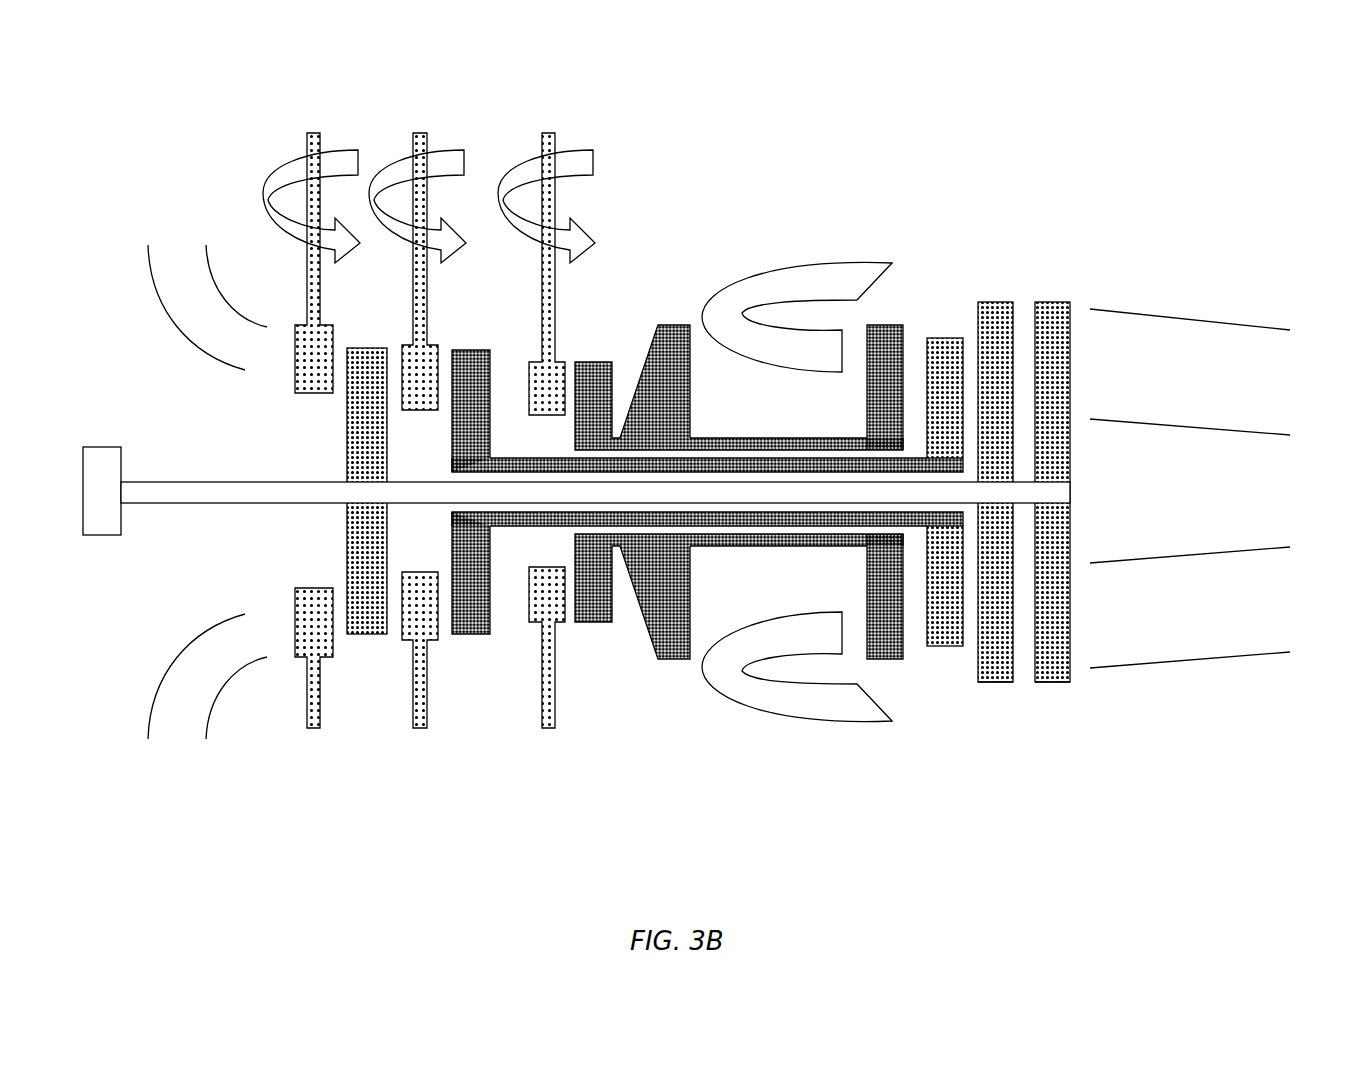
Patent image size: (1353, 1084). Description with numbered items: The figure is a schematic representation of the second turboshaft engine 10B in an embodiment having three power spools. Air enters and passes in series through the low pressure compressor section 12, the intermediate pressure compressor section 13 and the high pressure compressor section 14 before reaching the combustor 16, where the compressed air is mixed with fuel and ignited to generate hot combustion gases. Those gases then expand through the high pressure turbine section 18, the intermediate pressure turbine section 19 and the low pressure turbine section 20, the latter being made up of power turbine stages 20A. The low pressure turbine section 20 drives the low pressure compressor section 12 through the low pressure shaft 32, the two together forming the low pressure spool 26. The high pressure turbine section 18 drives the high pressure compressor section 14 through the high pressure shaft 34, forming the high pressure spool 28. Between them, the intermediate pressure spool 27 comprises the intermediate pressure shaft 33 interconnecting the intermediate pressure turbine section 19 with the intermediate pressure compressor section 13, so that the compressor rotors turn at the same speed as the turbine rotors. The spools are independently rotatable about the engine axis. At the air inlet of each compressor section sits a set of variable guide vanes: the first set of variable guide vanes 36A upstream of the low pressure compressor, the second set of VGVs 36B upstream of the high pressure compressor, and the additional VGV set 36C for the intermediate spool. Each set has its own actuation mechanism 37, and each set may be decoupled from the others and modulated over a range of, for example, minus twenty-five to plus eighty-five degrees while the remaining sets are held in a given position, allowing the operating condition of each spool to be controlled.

The second turboshaft engine 10B is at (1153, 189).
The low pressure compressor section 12 is at (370, 636).
The intermediate pressure compressor section 13 is at (470, 636).
The high pressure compressor section 14 is at (617, 545).
The combustor 16 is at (785, 742).
The high pressure turbine section 18 is at (885, 325).
The intermediate pressure turbine section 19 is at (948, 338).
The low pressure turbine section 20 is at (1048, 312).
The power turbine stages 20A is at (1000, 682).
The low pressure spool 26 is at (576, 335).
The intermediate pressure spool 27 is at (517, 457).
The high pressure spool 28 is at (767, 438).
The low pressure shaft 32 is at (735, 490).
The intermediate pressure shaft 33 is at (640, 527).
The high pressure shaft 34 is at (810, 537).
The first set of variable guide vanes 36A is at (293, 645).
The second set of variable guide vanes 36B is at (535, 628).
The additional set of variable guide vanes 36C is at (407, 645).
The actuation mechanisms 37 is at (300, 150).